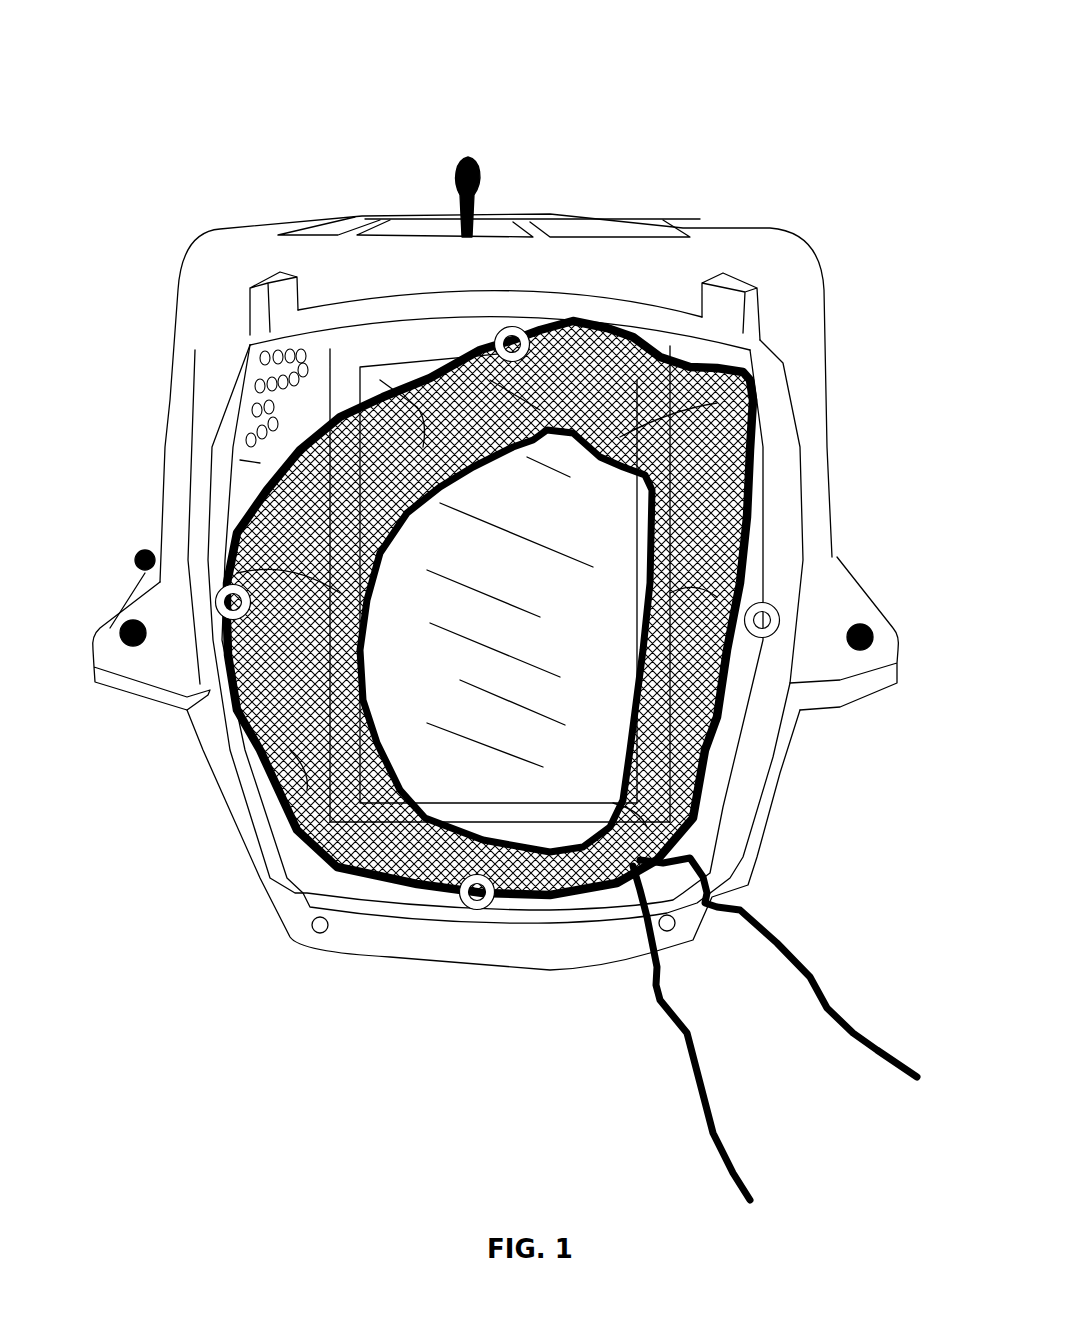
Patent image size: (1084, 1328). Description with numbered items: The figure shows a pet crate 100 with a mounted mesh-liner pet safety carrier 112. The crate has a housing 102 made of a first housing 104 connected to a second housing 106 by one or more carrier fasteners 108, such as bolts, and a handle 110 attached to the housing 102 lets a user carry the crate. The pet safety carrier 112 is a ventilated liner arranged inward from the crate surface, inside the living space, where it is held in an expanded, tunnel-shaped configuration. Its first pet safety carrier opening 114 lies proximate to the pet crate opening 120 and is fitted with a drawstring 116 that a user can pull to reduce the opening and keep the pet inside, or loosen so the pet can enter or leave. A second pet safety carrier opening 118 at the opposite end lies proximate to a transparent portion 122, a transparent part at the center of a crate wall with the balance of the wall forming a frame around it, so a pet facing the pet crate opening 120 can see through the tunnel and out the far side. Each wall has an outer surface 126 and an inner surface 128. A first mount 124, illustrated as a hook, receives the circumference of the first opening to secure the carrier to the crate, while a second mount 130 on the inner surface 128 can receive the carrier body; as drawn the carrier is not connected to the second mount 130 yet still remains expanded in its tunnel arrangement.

The pet crate 100 is at (172, 58).
The housing 102 is at (662, 219).
The first housing 104 is at (800, 313).
The second housing 106 is at (277, 872).
The carrier fastener 108 is at (128, 630).
The handle 110 is at (463, 237).
The pet safety carrier 112 is at (707, 793).
The first pet safety carrier opening 114 is at (750, 527).
The drawstring 116 is at (657, 1000).
The second pet safety carrier opening 118 is at (573, 430).
The pet crate opening 120 is at (303, 333).
The transparent portion 122 is at (507, 530).
The first mount 124 is at (525, 337).
The outer surface 126 is at (767, 707).
The inner surface 128 is at (193, 413).
The second mount 130 is at (788, 607).